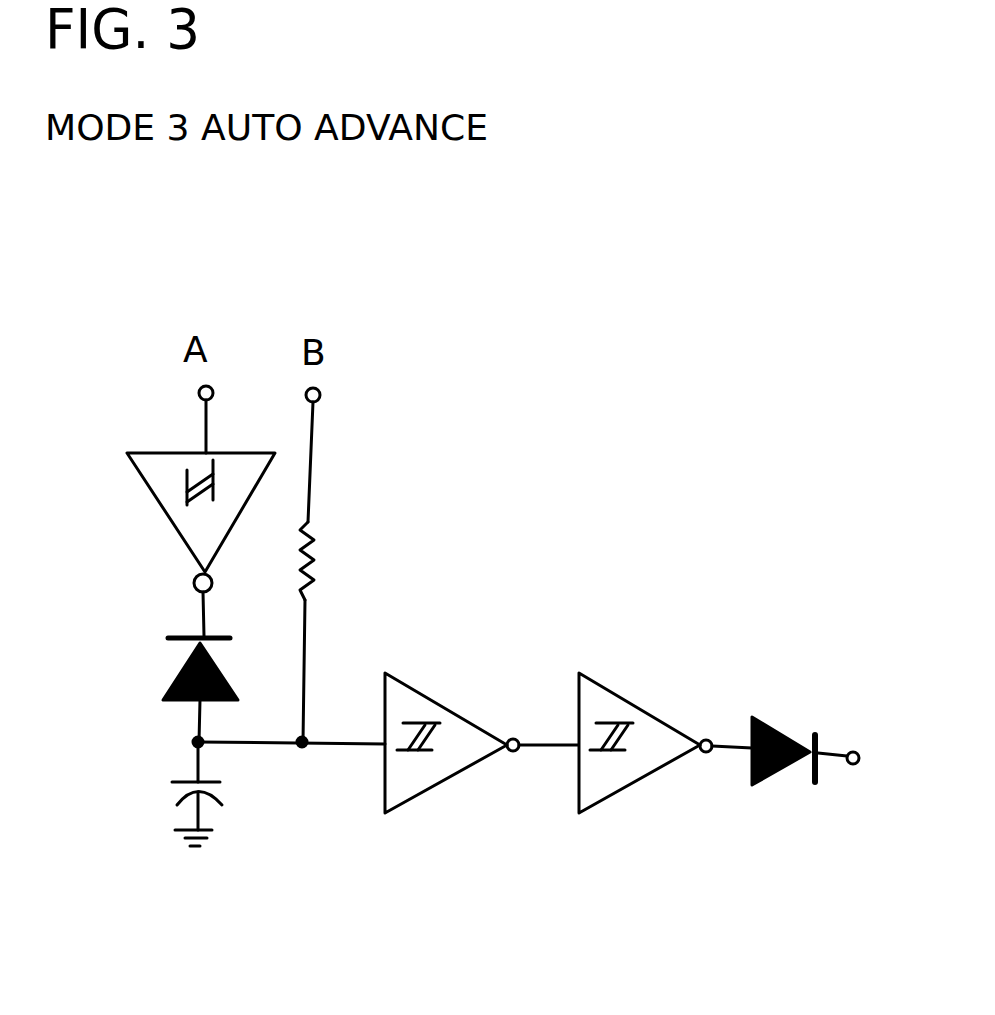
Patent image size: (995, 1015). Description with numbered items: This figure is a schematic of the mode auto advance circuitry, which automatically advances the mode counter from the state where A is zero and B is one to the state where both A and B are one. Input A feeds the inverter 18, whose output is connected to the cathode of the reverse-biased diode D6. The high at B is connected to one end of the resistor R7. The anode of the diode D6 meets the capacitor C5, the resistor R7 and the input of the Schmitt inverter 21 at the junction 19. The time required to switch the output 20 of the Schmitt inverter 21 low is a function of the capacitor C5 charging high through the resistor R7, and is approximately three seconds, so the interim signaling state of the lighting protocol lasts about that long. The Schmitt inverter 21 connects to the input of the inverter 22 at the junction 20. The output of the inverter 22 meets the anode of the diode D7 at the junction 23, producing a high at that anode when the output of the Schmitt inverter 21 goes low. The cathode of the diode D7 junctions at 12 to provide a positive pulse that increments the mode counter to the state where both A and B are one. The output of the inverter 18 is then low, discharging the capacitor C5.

The inverter 18 is at (143, 515).
The junction 19 is at (333, 753).
The output of inverter 21 20 is at (552, 735).
The Schmitt inverter 21 is at (447, 790).
The inverter 22 is at (657, 782).
The junction 23 is at (725, 732).
The junction 12 is at (873, 748).
The diode D6 is at (168, 662).
The diode D7 is at (789, 789).
The capacitor C5 is at (177, 772).
The resistor R7 is at (352, 568).